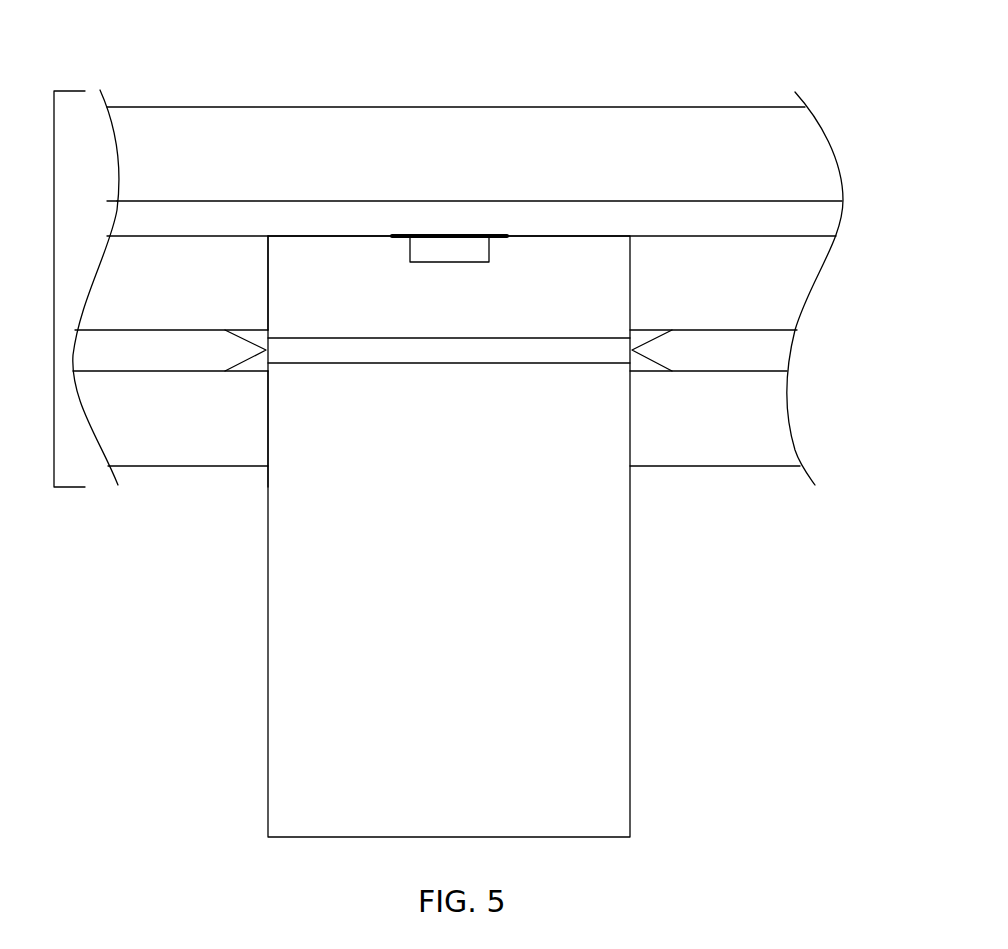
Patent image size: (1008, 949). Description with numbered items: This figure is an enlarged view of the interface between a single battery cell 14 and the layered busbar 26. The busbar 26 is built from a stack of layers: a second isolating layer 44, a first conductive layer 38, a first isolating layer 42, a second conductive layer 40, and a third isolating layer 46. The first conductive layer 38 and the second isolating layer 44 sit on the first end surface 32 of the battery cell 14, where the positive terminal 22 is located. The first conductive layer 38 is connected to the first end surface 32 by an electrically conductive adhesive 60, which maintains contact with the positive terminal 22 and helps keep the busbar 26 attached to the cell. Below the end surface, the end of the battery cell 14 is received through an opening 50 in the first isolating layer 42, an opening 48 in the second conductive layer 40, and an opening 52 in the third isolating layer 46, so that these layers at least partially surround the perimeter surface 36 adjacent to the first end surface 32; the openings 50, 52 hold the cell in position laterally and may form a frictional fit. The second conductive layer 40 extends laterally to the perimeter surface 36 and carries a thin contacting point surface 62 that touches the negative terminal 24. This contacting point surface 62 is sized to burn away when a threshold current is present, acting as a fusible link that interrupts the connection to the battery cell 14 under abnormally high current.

The battery cell 14 is at (679, 655).
The positive terminal 22 is at (431, 245).
The negative terminal 24 is at (460, 353).
The busbar 26 is at (54, 119).
The first end surface 32 is at (311, 236).
The perimeter surface 36 is at (583, 571).
The first conductive layer 38 is at (827, 217).
The second conductive layer 40 is at (787, 357).
The first isolating layer 42 is at (805, 297).
The second isolating layer 44 is at (772, 122).
The third isolating layer 46 is at (778, 417).
The opening 48 is at (632, 330).
The opening 50 is at (266, 296).
The opening 52 is at (268, 420).
The electrically conductive adhesive 60 is at (493, 236).
The contacting point surface 62 is at (248, 352).